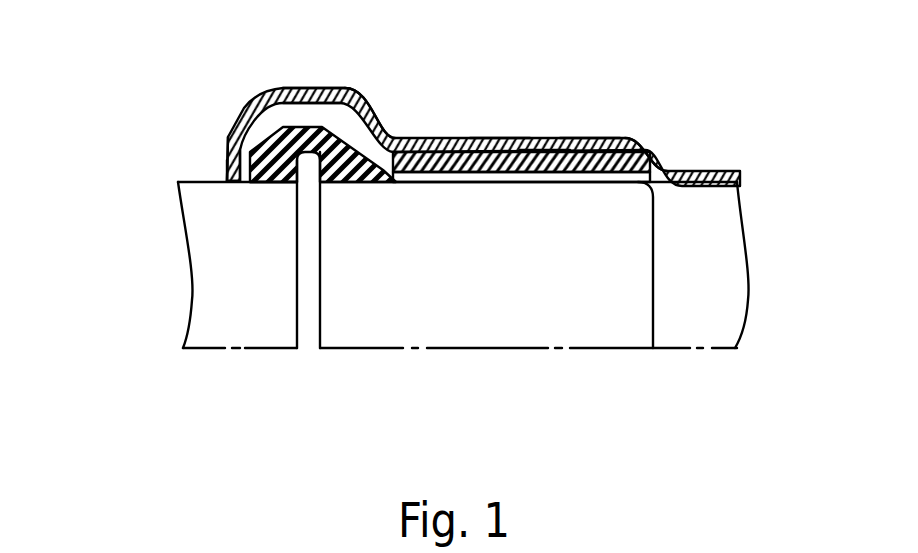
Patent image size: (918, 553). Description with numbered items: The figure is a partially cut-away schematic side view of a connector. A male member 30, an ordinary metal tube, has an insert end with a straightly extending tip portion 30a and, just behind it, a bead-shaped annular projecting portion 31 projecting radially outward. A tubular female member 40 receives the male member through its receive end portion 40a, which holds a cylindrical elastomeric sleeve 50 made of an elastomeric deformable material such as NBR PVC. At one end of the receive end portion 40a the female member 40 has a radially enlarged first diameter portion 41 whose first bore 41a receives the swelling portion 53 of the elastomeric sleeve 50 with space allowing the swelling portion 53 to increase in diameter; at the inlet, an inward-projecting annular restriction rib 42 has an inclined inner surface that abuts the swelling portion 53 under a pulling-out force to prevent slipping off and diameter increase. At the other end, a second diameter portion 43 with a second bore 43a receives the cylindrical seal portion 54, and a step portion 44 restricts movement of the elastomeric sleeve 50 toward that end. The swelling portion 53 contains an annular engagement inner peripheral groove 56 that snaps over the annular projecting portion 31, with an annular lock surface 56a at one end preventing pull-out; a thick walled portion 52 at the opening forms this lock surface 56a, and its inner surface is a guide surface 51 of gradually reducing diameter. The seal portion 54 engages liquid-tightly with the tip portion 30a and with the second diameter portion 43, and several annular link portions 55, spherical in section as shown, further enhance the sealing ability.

The male member 30 is at (191, 318).
The tip portion 30a is at (518, 322).
The annular projecting portion 31 is at (312, 320).
The female member 40 is at (683, 168).
The receive end portion 40a is at (498, 145).
The first diameter portion 41 is at (290, 93).
The first bore 41a is at (355, 138).
The annular restriction rib 42 is at (230, 138).
The second diameter portion 43 is at (543, 148).
The second bore 43a is at (585, 146).
The step portion 44 is at (653, 152).
The elastomeric sleeve 50 is at (362, 108).
The guide surface 51 is at (240, 169).
The thick walled portion 52 is at (273, 183).
The swelling portion 53 is at (307, 127).
The seal portion 54 is at (500, 182).
The annular link portion 55 is at (403, 182).
The engagement inner peripheral groove 56 is at (333, 185).
The lock surface 56a is at (292, 185).